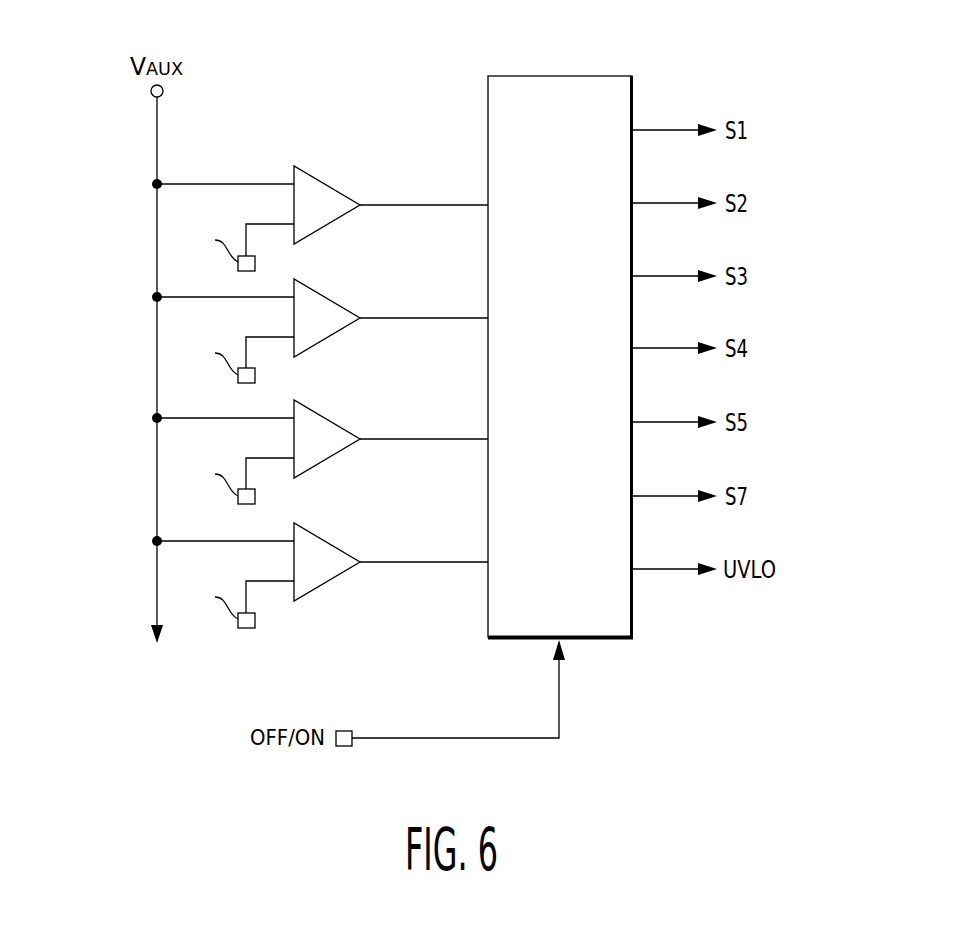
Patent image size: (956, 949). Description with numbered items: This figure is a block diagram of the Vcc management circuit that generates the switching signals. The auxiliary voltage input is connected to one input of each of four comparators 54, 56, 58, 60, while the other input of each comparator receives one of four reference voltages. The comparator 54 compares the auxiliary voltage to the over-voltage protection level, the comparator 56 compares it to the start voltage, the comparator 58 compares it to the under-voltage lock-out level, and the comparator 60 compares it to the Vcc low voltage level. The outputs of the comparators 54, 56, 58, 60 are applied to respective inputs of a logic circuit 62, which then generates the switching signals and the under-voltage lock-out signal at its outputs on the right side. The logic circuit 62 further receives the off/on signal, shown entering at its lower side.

The comparator 54 is at (309, 180).
The comparator 56 is at (310, 293).
The comparator 58 is at (309, 414).
The comparator 60 is at (311, 540).
The logic circuit 62 is at (513, 90).